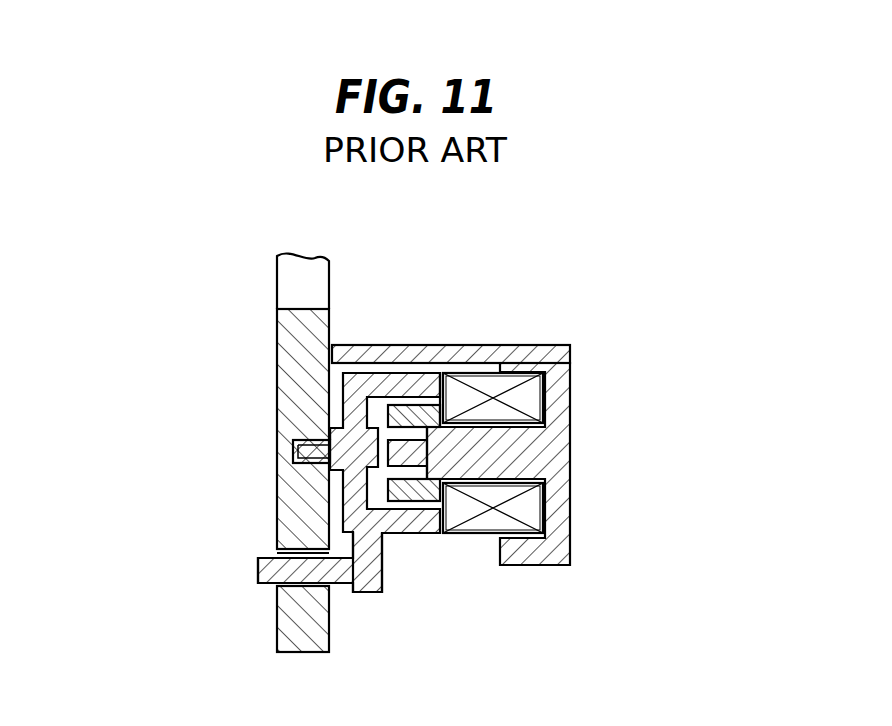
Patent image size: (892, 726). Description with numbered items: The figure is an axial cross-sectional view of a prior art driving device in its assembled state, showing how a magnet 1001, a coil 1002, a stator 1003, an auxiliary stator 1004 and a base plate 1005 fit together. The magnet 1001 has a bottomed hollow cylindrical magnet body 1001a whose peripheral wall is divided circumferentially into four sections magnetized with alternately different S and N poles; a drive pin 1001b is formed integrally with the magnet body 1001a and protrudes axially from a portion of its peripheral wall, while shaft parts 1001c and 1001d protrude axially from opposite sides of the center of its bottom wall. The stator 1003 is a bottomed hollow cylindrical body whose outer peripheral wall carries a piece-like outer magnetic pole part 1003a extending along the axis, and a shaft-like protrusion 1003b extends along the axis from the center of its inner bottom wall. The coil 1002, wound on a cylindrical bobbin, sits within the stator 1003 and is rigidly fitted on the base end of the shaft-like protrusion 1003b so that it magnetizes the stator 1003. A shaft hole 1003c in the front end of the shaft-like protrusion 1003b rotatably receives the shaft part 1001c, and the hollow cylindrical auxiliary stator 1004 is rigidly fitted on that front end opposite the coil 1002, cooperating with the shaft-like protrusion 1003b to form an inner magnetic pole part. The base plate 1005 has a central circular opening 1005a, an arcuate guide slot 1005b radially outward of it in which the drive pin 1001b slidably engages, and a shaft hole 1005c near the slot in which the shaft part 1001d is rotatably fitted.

The magnet 1001 is at (375, 385).
The magnet body 1001a is at (430, 388).
The drive pin 1001b is at (266, 570).
The shaft part 1001c is at (423, 467).
The shaft part 1001d is at (293, 447).
The coil 1002 is at (528, 344).
The stator 1003 is at (571, 380).
The outer magnetic pole part 1003a is at (510, 383).
The shaft-like protrusion 1003b is at (527, 458).
The shaft hole 1003c is at (412, 424).
The auxiliary stator 1004 is at (402, 481).
The base plate 1005 is at (300, 308).
The circular opening 1005a is at (279, 297).
The arcuate guide slot 1005b is at (278, 587).
The shaft hole 1005c is at (280, 450).